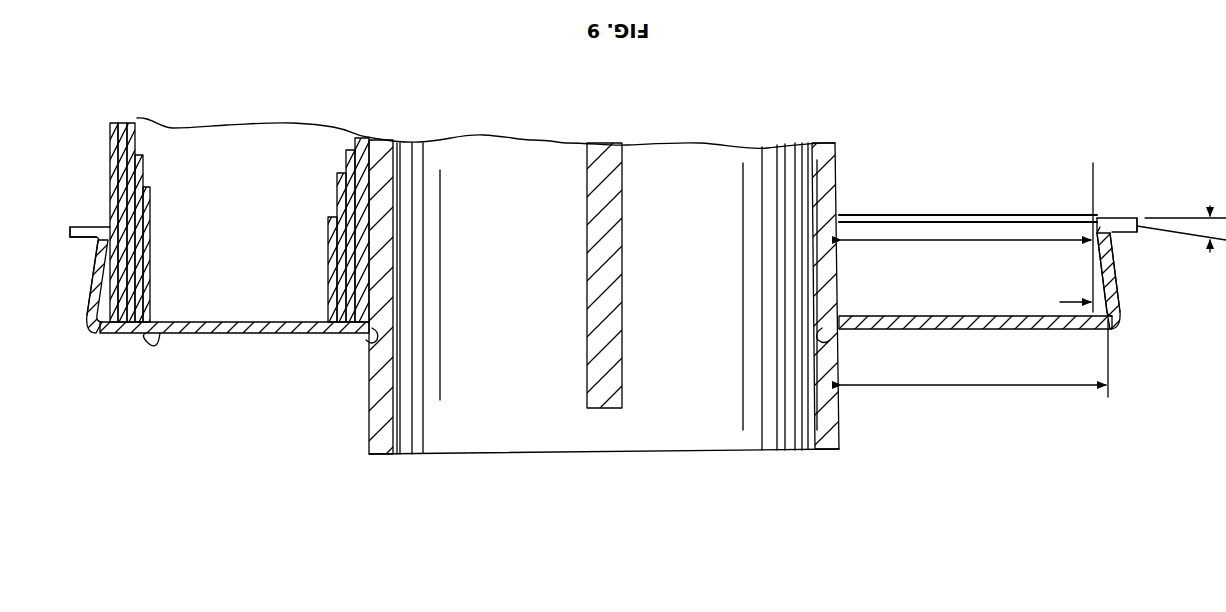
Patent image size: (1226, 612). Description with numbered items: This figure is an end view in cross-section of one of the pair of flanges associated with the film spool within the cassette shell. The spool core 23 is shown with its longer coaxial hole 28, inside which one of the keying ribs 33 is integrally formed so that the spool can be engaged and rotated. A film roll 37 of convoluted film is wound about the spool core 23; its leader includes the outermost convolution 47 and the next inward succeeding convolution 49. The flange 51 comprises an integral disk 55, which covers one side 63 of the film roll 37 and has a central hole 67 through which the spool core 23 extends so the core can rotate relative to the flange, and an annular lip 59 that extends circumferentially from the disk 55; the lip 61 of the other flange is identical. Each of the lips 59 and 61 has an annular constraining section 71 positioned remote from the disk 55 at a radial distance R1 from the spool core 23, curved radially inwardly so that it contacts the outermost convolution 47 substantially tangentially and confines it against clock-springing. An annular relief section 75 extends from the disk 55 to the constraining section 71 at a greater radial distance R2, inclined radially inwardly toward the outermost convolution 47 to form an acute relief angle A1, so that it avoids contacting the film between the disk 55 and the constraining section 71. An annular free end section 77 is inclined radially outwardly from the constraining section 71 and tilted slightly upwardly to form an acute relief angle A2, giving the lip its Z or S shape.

The spool core 23 is at (824, 188).
The longer coaxial hole 28 is at (540, 452).
The keying rib 33 is at (587, 360).
The film roll 37 is at (250, 182).
The outermost convolution 47 is at (110, 182).
The next inward succeeding convolution 49 is at (110, 140).
The flange 51 is at (100, 337).
The disk 55 is at (262, 335).
The annular lip 59 is at (86, 297).
The annular lip 61 is at (826, 450).
The side of film roll 63 is at (164, 322).
The central hole 67 is at (370, 343).
The annular constraining section 71 is at (98, 247).
The annular relief section 75 is at (92, 290).
The annular free end section 77 is at (74, 227).
The radial distance R1 is at (958, 234).
The radial distance R2 is at (980, 386).
The relief angle A1 is at (1062, 302).
The relief angle A2 is at (1210, 206).